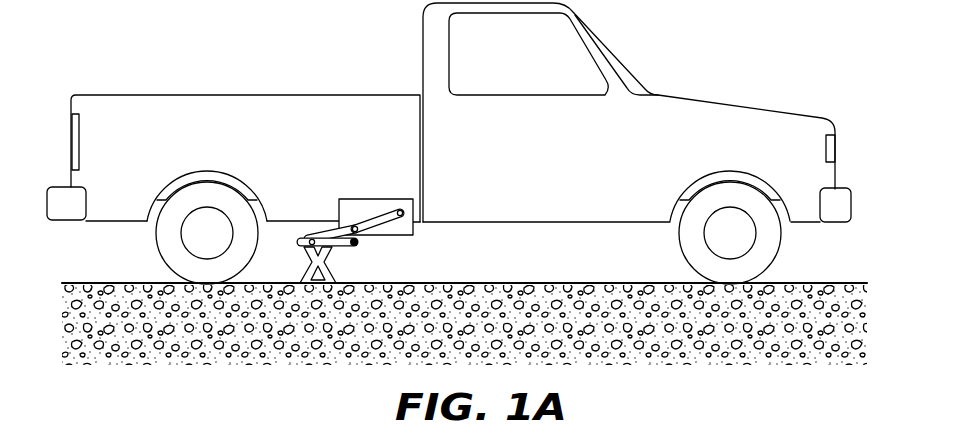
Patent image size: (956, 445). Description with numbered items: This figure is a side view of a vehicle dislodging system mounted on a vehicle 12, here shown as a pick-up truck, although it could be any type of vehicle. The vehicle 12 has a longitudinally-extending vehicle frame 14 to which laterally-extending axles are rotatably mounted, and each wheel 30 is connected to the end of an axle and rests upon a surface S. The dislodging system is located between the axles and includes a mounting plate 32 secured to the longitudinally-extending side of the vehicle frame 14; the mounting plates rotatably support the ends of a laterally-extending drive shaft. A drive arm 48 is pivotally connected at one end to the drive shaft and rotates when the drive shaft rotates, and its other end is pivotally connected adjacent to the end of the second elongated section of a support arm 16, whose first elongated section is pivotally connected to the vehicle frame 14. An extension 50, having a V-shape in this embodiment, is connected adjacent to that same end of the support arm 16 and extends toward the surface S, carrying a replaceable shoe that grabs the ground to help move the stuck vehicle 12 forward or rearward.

The vehicle 12 is at (449, 143).
The vehicle frame 14 is at (678, 210).
The support arm 16 is at (357, 243).
The wheel 30 is at (206, 192).
The mounting plate 32 is at (372, 212).
The drive arm 48 is at (338, 233).
The extension 50 is at (316, 262).
The surface S is at (608, 284).